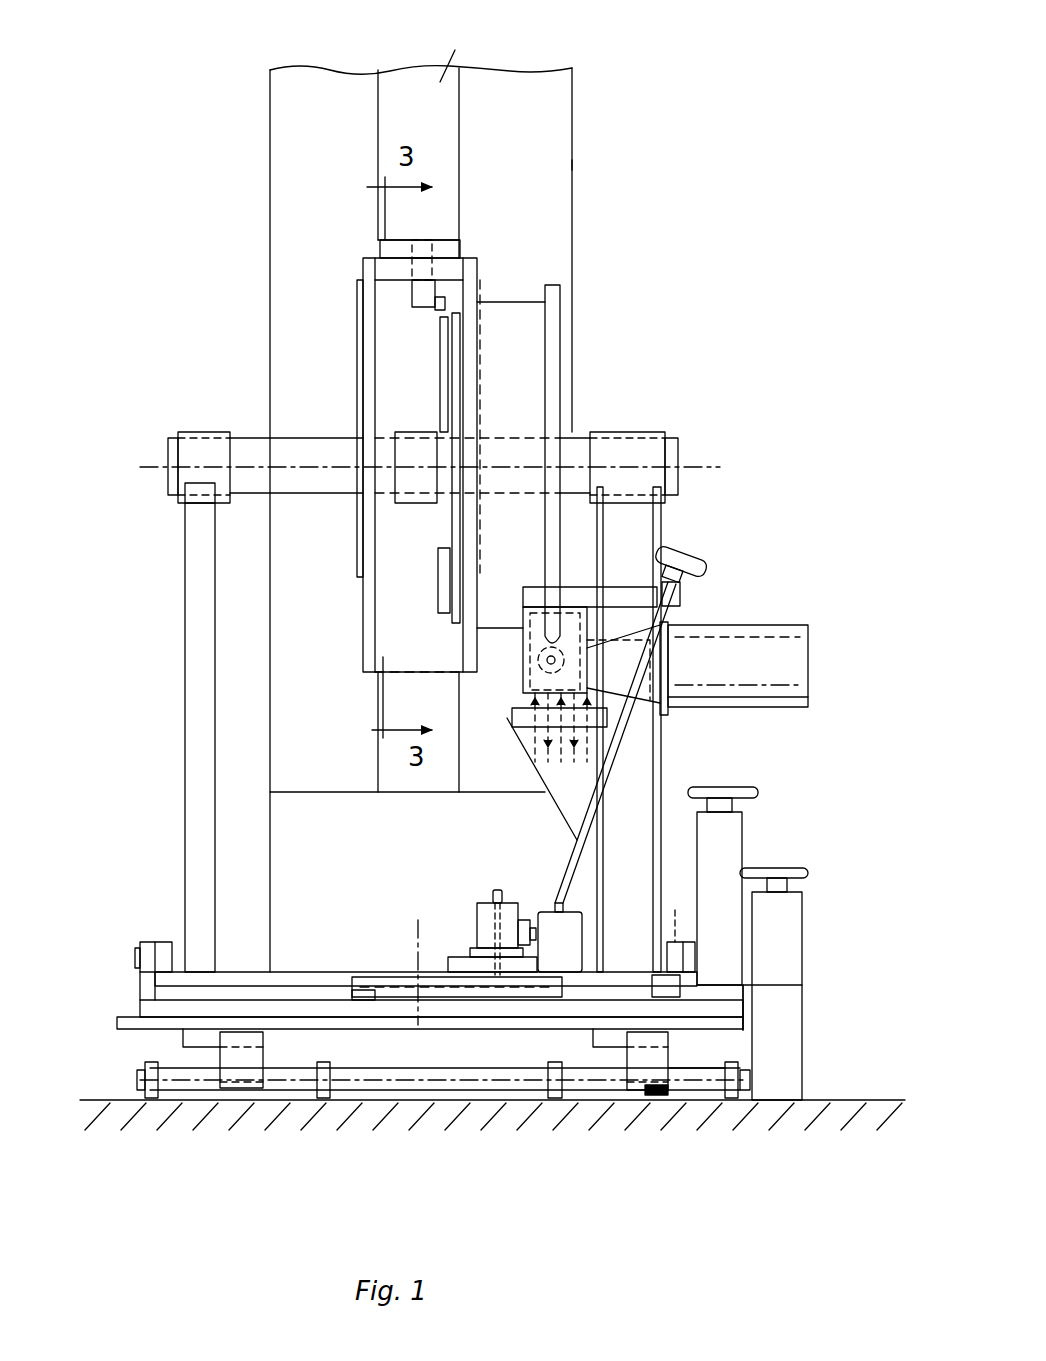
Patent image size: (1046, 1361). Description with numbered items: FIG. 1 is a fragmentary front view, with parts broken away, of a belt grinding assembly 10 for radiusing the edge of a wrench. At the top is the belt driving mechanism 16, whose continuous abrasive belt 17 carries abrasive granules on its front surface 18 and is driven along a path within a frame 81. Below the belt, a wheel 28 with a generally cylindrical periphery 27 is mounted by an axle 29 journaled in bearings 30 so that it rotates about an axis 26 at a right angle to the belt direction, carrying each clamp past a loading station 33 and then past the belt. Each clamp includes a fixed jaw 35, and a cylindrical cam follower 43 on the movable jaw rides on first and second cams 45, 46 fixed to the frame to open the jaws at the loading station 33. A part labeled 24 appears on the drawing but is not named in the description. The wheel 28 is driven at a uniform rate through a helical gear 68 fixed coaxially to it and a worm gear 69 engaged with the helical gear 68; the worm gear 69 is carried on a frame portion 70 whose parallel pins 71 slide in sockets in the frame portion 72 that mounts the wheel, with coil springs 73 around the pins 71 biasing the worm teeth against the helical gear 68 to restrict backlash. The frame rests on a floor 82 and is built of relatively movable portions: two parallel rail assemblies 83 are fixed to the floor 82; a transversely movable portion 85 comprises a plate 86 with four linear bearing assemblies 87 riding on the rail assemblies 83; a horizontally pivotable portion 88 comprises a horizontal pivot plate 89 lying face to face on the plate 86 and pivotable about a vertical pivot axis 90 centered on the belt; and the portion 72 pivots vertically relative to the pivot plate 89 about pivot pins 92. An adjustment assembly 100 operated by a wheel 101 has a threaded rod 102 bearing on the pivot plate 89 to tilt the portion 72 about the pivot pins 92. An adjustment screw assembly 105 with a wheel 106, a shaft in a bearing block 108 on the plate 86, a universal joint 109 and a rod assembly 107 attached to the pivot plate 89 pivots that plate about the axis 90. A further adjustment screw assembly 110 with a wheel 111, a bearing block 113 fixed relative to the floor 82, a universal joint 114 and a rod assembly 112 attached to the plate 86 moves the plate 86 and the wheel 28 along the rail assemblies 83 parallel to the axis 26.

The belt grinding assembly 10 is at (772, 482).
The belt driving mechanism 16 is at (573, 98).
The abrasive belt 17 is at (464, 47).
The front surface 18 is at (445, 120).
The carriage cap 24 is at (362, 270).
The axis 26 is at (147, 466).
The periphery 27 is at (446, 258).
The wheel 28 is at (364, 319).
The axle 29 is at (240, 437).
The bearings 30 is at (190, 432).
The loading station 33 is at (430, 230).
The fixed jaw 35 is at (397, 243).
The cam follower 43 is at (447, 300).
The first cam 45 is at (441, 368).
The second cam 46 is at (440, 590).
The helical gear 68 is at (563, 349).
The worm gear 69 is at (697, 668).
The frame means portion 70 is at (528, 720).
The pins 71 is at (545, 745).
The frame portion 72 is at (187, 712).
The coil springs 73 is at (530, 728).
The frame 81 is at (553, 164).
The floor 82 is at (876, 1112).
The rail assemblies 83 is at (390, 1075).
The transversely movable portion 85 is at (512, 1030).
The transversely movable plate 86 is at (122, 1024).
The linear bearing assemblies 87 is at (262, 1060).
The horizontally pivotable portion 88 is at (140, 1004).
The horizontal pivot plate 89 is at (180, 1010).
The vertical pivot axis 90 is at (417, 950).
The pivot pins 92 is at (138, 955).
The adjustment assembly 100 is at (625, 760).
The wheel 101 is at (703, 568).
The threaded axially movable rod 102 is at (492, 890).
The adjustment screw assembly 105 is at (773, 869).
The wheel 106 is at (745, 792).
The rod assembly 107 is at (360, 985).
The bearing block 108 is at (740, 858).
The universal joint 109 is at (760, 985).
The adjustment screw assembly 110 is at (820, 977).
The wheel 111 is at (805, 874).
The rod assembly 112 is at (700, 1082).
The bearing block 113 is at (790, 922).
The universal joint 114 is at (750, 1070).